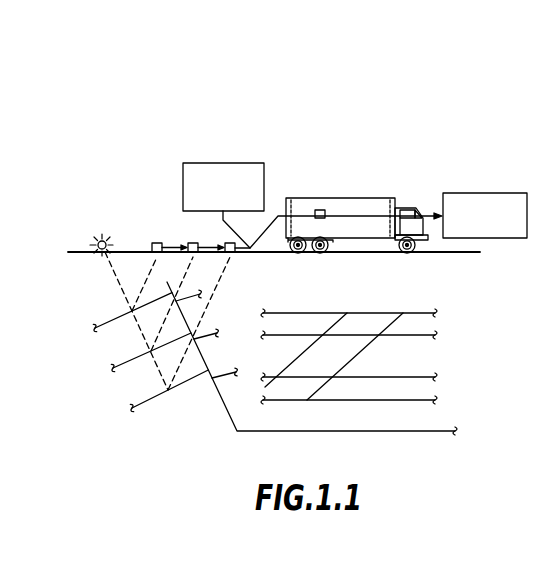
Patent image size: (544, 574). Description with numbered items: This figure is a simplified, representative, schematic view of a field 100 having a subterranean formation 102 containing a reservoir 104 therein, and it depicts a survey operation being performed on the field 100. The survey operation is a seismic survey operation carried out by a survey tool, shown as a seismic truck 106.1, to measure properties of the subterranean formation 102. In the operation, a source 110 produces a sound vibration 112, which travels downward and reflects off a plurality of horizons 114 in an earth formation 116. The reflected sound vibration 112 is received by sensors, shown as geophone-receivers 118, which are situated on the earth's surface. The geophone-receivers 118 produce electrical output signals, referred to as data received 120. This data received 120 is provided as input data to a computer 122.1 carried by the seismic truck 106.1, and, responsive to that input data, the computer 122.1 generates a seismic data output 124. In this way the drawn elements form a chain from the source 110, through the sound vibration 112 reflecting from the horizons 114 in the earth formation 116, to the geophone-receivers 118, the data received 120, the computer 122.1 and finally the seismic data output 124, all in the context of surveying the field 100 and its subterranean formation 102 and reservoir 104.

The field 100 is at (475, 172).
The subterranean formation 102 is at (413, 303).
The reservoir 104 is at (418, 364).
The seismic truck 106.1 is at (387, 196).
The source 110 is at (98, 241).
The sound vibration 112 is at (143, 286).
The horizons 114 is at (104, 323).
The earth formation 116 is at (223, 404).
The geophone-receivers 118 is at (228, 243).
The data received 120 is at (207, 163).
The computer 122.1 is at (328, 208).
The seismic data output 124 is at (497, 193).